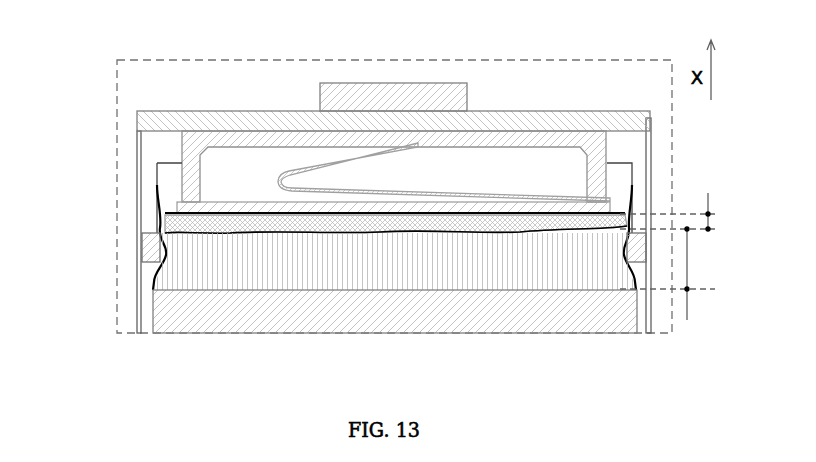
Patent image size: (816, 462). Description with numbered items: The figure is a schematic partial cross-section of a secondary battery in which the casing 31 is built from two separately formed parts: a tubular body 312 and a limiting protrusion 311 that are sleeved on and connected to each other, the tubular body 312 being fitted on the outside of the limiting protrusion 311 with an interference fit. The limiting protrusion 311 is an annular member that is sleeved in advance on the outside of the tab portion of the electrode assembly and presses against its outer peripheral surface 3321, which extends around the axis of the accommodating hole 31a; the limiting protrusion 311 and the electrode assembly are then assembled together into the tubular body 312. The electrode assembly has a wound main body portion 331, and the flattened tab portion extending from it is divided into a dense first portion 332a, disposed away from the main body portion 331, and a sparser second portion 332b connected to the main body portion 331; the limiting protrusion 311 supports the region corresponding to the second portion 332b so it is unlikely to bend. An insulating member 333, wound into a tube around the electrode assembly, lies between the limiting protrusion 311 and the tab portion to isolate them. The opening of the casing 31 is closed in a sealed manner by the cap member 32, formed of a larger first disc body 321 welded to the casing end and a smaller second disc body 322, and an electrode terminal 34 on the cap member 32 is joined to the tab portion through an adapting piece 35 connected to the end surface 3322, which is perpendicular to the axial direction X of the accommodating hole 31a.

The casing 31 is at (48, 203).
The limiting protrusion 311 is at (160, 232).
The tubular body 312 is at (160, 257).
The accommodating hole 31a is at (633, 151).
The cap member 32 is at (48, 97).
The first disc body 321 is at (137, 114).
The second disc body 322 is at (153, 140).
The main body portion 331 is at (425, 310).
The first portion 332a is at (685, 211).
The second portion 332b is at (675, 276).
The insulating member 333 is at (157, 185).
The outer peripheral surface 3321 is at (175, 262).
The end surface 3322 is at (238, 222).
The electrode terminal 34 is at (395, 92).
The adapting piece 35 is at (417, 196).